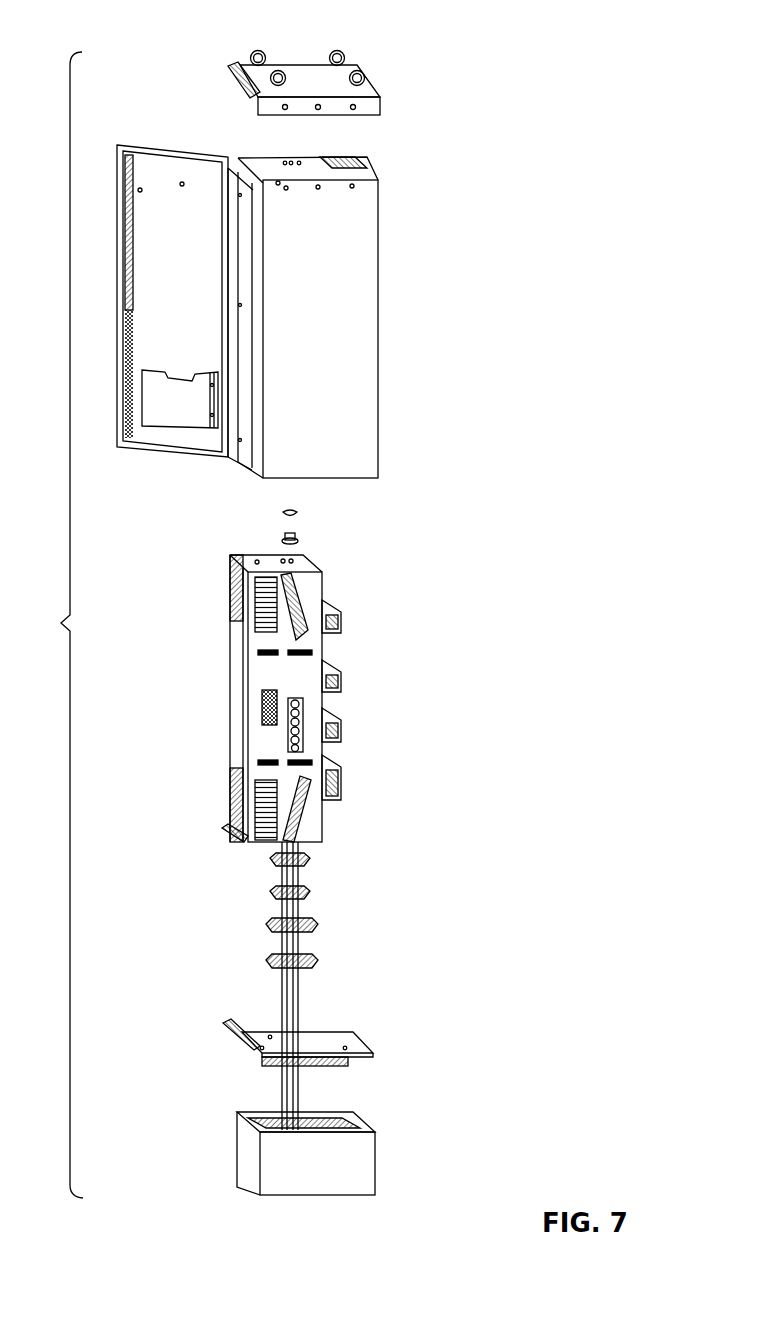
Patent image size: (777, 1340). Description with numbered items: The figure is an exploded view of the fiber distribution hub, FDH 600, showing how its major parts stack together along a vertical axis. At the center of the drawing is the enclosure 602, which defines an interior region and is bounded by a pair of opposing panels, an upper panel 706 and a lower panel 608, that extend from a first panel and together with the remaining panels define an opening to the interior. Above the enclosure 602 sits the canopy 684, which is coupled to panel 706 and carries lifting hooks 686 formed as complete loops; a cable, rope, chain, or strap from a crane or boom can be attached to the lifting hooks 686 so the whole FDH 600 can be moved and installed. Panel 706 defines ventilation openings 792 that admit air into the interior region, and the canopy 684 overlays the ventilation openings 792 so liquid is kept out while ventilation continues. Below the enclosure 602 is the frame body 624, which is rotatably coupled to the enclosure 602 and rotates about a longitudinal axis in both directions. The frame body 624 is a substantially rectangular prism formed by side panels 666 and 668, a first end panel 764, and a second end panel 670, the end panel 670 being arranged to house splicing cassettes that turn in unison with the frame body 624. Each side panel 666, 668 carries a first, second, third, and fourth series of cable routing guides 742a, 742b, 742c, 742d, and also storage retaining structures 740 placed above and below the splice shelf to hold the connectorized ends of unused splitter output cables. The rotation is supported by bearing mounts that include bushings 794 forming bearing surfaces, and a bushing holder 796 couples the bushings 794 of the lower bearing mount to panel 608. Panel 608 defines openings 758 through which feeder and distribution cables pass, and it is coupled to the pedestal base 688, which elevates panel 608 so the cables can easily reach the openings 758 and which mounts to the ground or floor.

The FDH 600 is at (110, 28).
The enclosure 602 is at (378, 280).
The panel 608 is at (355, 1035).
The frame body 624 is at (323, 577).
The side panel 666 is at (240, 733).
The side panel 668 is at (265, 667).
The second end panel 670 is at (237, 845).
The canopy 684 is at (380, 93).
The lifting hooks 686 is at (345, 53).
The pedestal base 688 is at (377, 1160).
The panel 706 is at (290, 160).
The storage retaining structure 740 is at (232, 600).
The first series of cable routing guides 742a is at (300, 585).
The second series of cable routing guides 742b is at (278, 695).
The third series of routing guides 742c is at (302, 740).
The fourth series of cable routing guides 742d is at (306, 808).
The openings 758 is at (330, 1062).
The first end panel 764 is at (247, 560).
The ventilation openings 792 is at (368, 160).
The bushings 794 is at (297, 510).
The bushing holder 796 is at (316, 925).